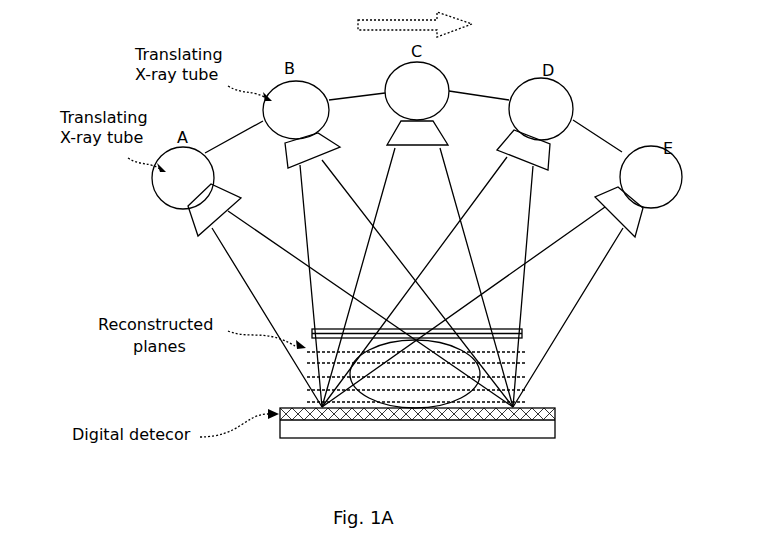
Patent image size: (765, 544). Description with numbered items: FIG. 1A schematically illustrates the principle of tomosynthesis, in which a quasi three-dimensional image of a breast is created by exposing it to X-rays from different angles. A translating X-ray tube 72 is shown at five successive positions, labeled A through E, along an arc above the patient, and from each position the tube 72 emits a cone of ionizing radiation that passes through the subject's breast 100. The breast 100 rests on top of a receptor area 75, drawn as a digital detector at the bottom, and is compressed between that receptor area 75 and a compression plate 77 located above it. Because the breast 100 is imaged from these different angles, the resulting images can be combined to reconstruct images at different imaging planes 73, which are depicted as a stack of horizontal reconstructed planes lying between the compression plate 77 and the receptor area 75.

The X-ray tube 72 is at (434, 69).
The imaging planes 73 is at (307, 402).
The receptor area 75 is at (566, 413).
The compression plate 77 is at (523, 333).
The breast 100 is at (414, 385).